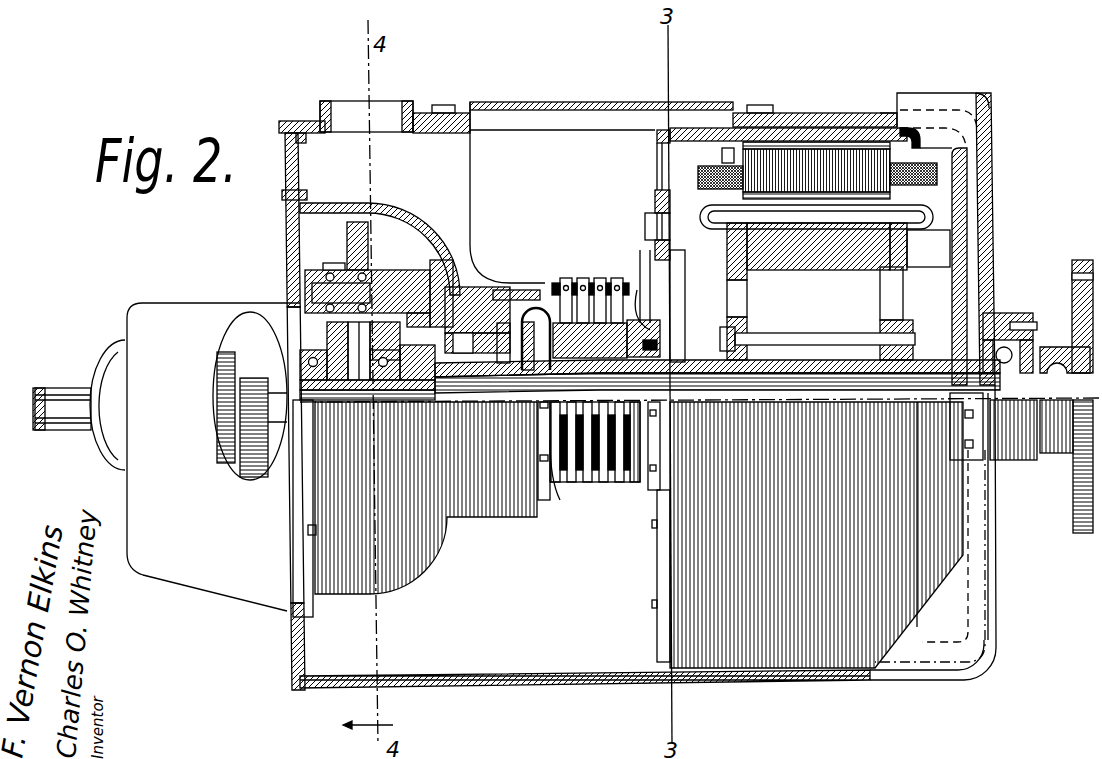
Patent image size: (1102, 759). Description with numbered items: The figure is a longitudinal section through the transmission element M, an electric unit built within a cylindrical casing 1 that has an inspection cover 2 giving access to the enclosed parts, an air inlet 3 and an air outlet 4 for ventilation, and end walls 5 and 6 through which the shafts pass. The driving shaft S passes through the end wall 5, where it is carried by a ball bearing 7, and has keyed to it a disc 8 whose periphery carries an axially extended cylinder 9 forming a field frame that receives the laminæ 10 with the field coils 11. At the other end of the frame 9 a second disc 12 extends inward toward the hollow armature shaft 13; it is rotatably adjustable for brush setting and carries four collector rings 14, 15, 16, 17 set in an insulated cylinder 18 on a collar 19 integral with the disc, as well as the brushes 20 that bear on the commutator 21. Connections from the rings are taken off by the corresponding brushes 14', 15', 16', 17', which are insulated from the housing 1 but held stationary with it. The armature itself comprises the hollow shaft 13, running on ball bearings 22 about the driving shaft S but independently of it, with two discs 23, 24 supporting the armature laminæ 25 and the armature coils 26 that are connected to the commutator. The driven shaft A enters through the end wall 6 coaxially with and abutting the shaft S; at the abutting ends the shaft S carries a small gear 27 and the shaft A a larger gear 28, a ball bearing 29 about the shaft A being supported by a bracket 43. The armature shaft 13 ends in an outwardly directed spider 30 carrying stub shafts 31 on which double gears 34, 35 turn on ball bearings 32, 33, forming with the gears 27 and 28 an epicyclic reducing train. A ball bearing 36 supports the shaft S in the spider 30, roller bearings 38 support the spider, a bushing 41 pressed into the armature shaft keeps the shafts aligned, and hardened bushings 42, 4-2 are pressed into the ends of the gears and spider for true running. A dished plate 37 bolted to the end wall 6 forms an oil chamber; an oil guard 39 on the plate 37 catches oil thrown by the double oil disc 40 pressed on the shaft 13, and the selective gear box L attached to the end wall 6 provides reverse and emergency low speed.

The cylindrical casing 1 is at (730, 680).
The inspection cover 2 is at (668, 104).
The air inlet 3 is at (388, 101).
The air outlet 4 is at (943, 109).
The end wall 5 is at (993, 190).
The end wall 6 is at (286, 226).
The ball bearing 7 is at (1027, 330).
The disc 8 is at (968, 175).
The field frame 9 is at (700, 128).
The laminæ 10 is at (893, 116).
The field coils 11 is at (940, 166).
The second disc 12 is at (655, 156).
The hollow armature shaft 13 is at (762, 352).
The collector ring 14 is at (551, 466).
The collector ring 15 is at (577, 465).
The collector ring 16 is at (599, 468).
The collector ring 17 is at (624, 465).
The brush 14' is at (551, 289).
The brush 15' is at (573, 287).
The brush 16' is at (608, 278).
The brush 17' is at (616, 286).
The insulated cylinder 18 is at (655, 333).
The collar 19 is at (645, 377).
The brushes 20 is at (645, 224).
The commutator 21 is at (686, 270).
The ball bearings 22 is at (882, 324).
The disc 23 is at (893, 284).
The disc 24 is at (748, 300).
The armature laminæ 25 is at (878, 252).
The armature coils 26 is at (925, 217).
The spur or herringbone gear 27 is at (375, 362).
The gear 28 is at (338, 382).
The ball bearing 29 is at (318, 382).
The spider 30 is at (420, 270).
The stub shafts 31 is at (471, 265).
The ball bearing 32 is at (383, 270).
The ball bearing 33 is at (287, 260).
The double gear 34 is at (370, 225).
The double gear 35 is at (345, 263).
The ball bearing 36 is at (447, 366).
The dished plate 37 is at (343, 210).
The roller bearings 38 is at (477, 310).
The oil guard 39 is at (536, 300).
The double oil disc 40 is at (505, 380).
The bushing 41 is at (452, 378).
The hardened and ground bushings 42 is at (385, 382).
The clutch flange 4-2 is at (303, 395).
The bracket 43 is at (294, 304).
The driven shaft A is at (55, 393).
The selective gear box L is at (232, 420).
The transmission element M is at (636, 680).
The driving shaft S is at (800, 398).